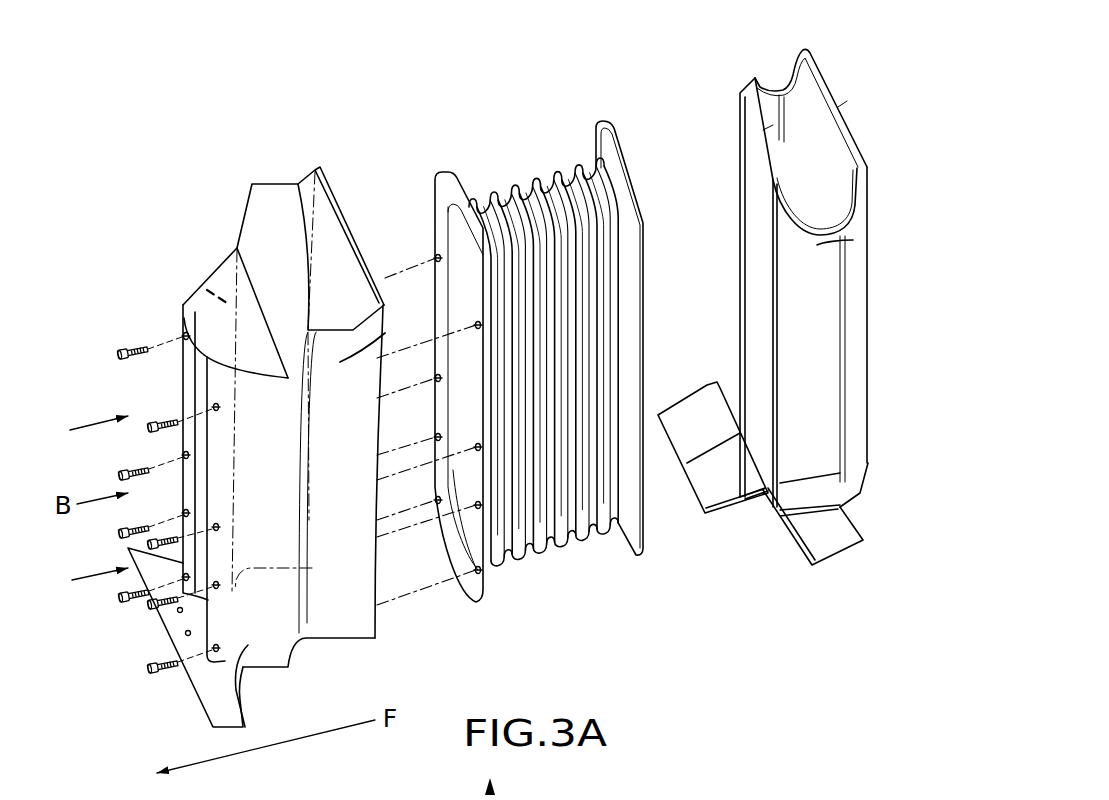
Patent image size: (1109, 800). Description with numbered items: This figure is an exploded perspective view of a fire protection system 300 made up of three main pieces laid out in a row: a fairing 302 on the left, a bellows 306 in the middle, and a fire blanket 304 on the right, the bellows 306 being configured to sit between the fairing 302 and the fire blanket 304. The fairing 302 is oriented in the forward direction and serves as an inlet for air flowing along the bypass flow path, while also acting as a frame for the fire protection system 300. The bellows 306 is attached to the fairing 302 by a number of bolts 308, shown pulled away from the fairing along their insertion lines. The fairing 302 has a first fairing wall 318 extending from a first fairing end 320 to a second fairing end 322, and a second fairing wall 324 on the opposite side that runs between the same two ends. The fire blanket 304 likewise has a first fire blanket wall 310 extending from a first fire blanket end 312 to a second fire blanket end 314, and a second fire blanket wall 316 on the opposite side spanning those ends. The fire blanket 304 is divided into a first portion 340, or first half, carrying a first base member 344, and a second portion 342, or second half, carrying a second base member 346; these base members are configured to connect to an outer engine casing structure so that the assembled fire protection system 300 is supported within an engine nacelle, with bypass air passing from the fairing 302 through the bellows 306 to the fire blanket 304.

The fire protection system 300 is at (172, 130).
The fairing 302 is at (268, 196).
The fire blanket 304 is at (853, 368).
The bellows 306 is at (540, 173).
The bolts 308 is at (122, 347).
The first fire blanket wall 310 is at (793, 328).
The first fire blanket end 312 is at (813, 457).
The second fire blanket end 314 is at (853, 240).
The second fire blanket wall 316 is at (735, 258).
The first fairing wall 318 is at (328, 488).
The first fairing end 320 is at (348, 587).
The second fairing end 322 is at (385, 296).
The second fairing wall 324 is at (202, 283).
The first portion 340 is at (857, 155).
The second portion 342 is at (822, 63).
The first base member 344 is at (840, 527).
The second base member 346 is at (728, 387).